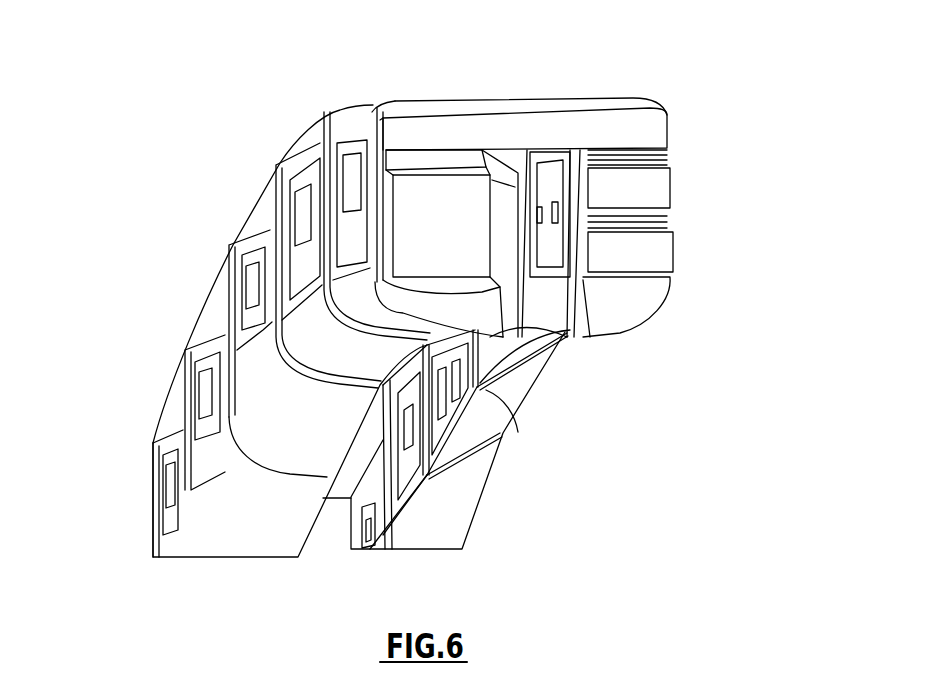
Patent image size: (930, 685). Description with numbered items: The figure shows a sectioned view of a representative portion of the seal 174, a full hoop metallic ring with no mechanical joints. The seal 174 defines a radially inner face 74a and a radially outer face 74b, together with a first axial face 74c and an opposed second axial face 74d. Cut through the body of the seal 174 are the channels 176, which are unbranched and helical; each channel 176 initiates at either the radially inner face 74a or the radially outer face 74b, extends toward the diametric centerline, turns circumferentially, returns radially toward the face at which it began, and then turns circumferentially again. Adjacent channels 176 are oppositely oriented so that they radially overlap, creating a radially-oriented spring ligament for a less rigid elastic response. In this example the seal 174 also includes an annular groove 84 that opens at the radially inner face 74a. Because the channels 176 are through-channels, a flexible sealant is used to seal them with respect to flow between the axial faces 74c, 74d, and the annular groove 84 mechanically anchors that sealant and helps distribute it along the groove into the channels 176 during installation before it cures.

The seal 174 is at (290, 331).
The radially inner face 74a is at (507, 400).
The radially outer face 74b is at (587, 102).
The first axial face 74c is at (357, 135).
The second axial face 74d is at (663, 190).
The channel 176 is at (667, 162).
The annular groove 84 is at (334, 545).